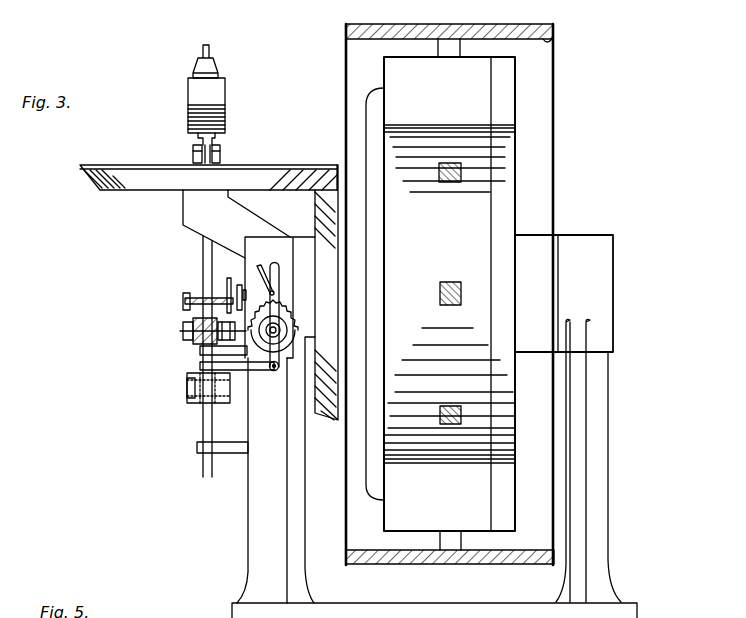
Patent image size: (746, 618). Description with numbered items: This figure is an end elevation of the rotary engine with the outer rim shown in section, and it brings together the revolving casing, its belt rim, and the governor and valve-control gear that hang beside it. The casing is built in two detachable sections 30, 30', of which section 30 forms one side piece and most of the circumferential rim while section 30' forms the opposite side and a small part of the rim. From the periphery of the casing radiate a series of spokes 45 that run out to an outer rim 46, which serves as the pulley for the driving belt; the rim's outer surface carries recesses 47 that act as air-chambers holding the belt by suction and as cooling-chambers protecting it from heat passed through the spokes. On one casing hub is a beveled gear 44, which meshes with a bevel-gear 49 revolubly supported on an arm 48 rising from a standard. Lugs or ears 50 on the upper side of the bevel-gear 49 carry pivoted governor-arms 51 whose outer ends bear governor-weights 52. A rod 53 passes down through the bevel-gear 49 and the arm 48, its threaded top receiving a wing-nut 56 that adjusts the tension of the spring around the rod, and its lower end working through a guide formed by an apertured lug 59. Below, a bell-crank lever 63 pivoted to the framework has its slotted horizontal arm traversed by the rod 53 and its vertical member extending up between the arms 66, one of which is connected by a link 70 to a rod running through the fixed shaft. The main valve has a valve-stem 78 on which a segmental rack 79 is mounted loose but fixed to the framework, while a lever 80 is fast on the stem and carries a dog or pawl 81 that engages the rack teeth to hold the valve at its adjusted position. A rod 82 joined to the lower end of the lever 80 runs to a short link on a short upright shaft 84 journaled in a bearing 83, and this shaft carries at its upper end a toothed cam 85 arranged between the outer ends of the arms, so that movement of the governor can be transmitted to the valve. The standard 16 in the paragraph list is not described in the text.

The standard 16 is at (604, 481).
The casing section 30 is at (414, 294).
The casing section 30' is at (576, 460).
The beveled gear 44 is at (325, 417).
The spokes 45 is at (457, 52).
The outer rim 46 is at (551, 46).
The recesses 47 is at (452, 25).
The arm 48 is at (187, 227).
The bevel-gear 49 is at (139, 191).
The lugs or ears 50 is at (193, 161).
The governor-arms 51 is at (215, 140).
The governor-weights 52 is at (218, 100).
The rod 53 is at (204, 270).
The wing-nut 56 is at (218, 73).
The apertured lug 59 is at (236, 454).
The bell-crank lever 63 is at (189, 391).
The arm 66 is at (198, 346).
The link 70 is at (199, 321).
The valve-stem 78 is at (282, 330).
The segmental rack 79 is at (284, 309).
The lever 80 is at (279, 275).
The dog or pawl 81 is at (262, 271).
The rod 82 is at (268, 375).
The bearing 83 is at (200, 352).
The short upright shaft 84 is at (200, 326).
The cam 85 is at (200, 338).